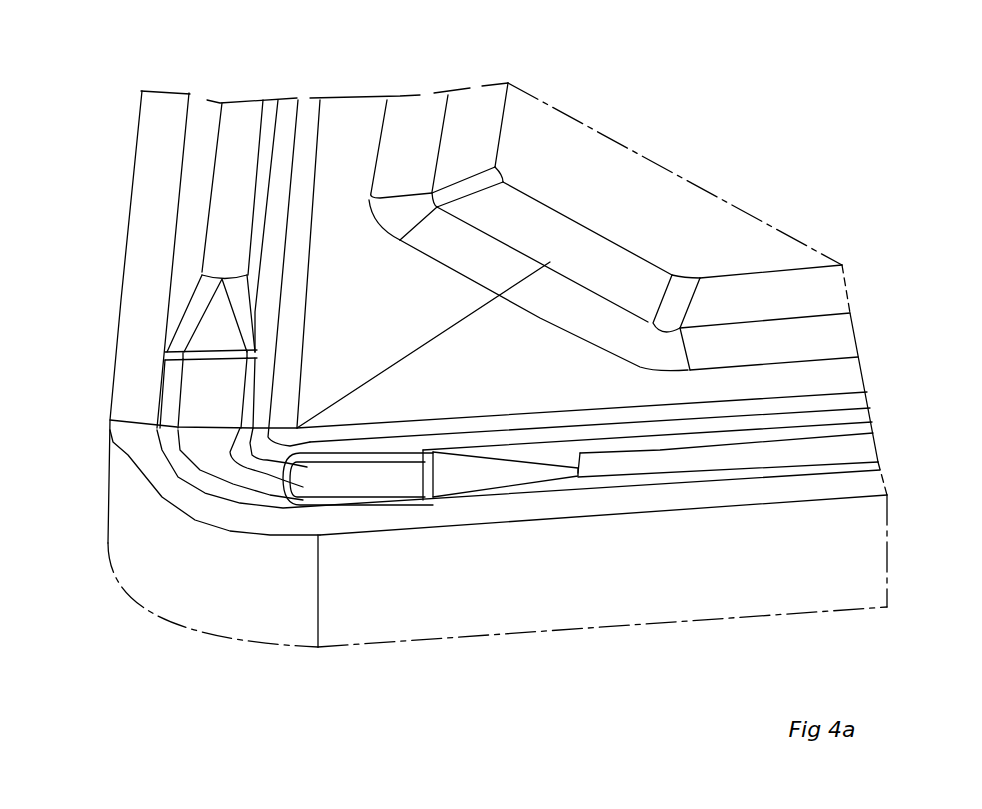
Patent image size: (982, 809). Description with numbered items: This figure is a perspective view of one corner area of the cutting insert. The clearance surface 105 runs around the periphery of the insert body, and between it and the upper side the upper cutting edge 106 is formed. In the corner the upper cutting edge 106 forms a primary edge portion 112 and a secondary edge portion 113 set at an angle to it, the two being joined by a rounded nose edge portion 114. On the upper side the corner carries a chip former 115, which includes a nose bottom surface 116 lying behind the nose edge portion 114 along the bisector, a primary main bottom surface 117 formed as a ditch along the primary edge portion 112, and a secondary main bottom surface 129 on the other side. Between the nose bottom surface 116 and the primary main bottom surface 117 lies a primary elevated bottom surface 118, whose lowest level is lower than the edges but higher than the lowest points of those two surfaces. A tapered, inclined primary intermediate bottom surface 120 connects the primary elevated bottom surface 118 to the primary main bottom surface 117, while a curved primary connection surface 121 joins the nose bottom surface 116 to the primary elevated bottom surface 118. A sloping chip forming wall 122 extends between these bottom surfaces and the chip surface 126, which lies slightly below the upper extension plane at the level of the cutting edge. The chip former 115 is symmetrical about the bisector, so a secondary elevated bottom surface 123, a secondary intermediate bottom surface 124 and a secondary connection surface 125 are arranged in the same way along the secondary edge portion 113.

The clearance surface 105 is at (567, 596).
The upper cutting edge 106 is at (131, 187).
The primary edge portion 112 is at (593, 517).
The secondary edge portion 113 is at (121, 316).
The nose edge portion 114 is at (167, 502).
The chip former 115 is at (510, 468).
The nose bottom surface 116 is at (243, 472).
The primary main bottom surface 117 is at (737, 457).
The primary elevated bottom surface 118 is at (334, 486).
The primary intermediate bottom surface 120 is at (468, 478).
The primary connection surface 121 is at (280, 480).
The chip forming wall 122 is at (622, 406).
The secondary elevated bottom surface 123 is at (186, 401).
The secondary intermediate bottom surface 124 is at (217, 322).
The secondary connection surface 125 is at (213, 448).
The chip surface 126 is at (455, 379).
The secondary main bottom surface 129 is at (237, 135).